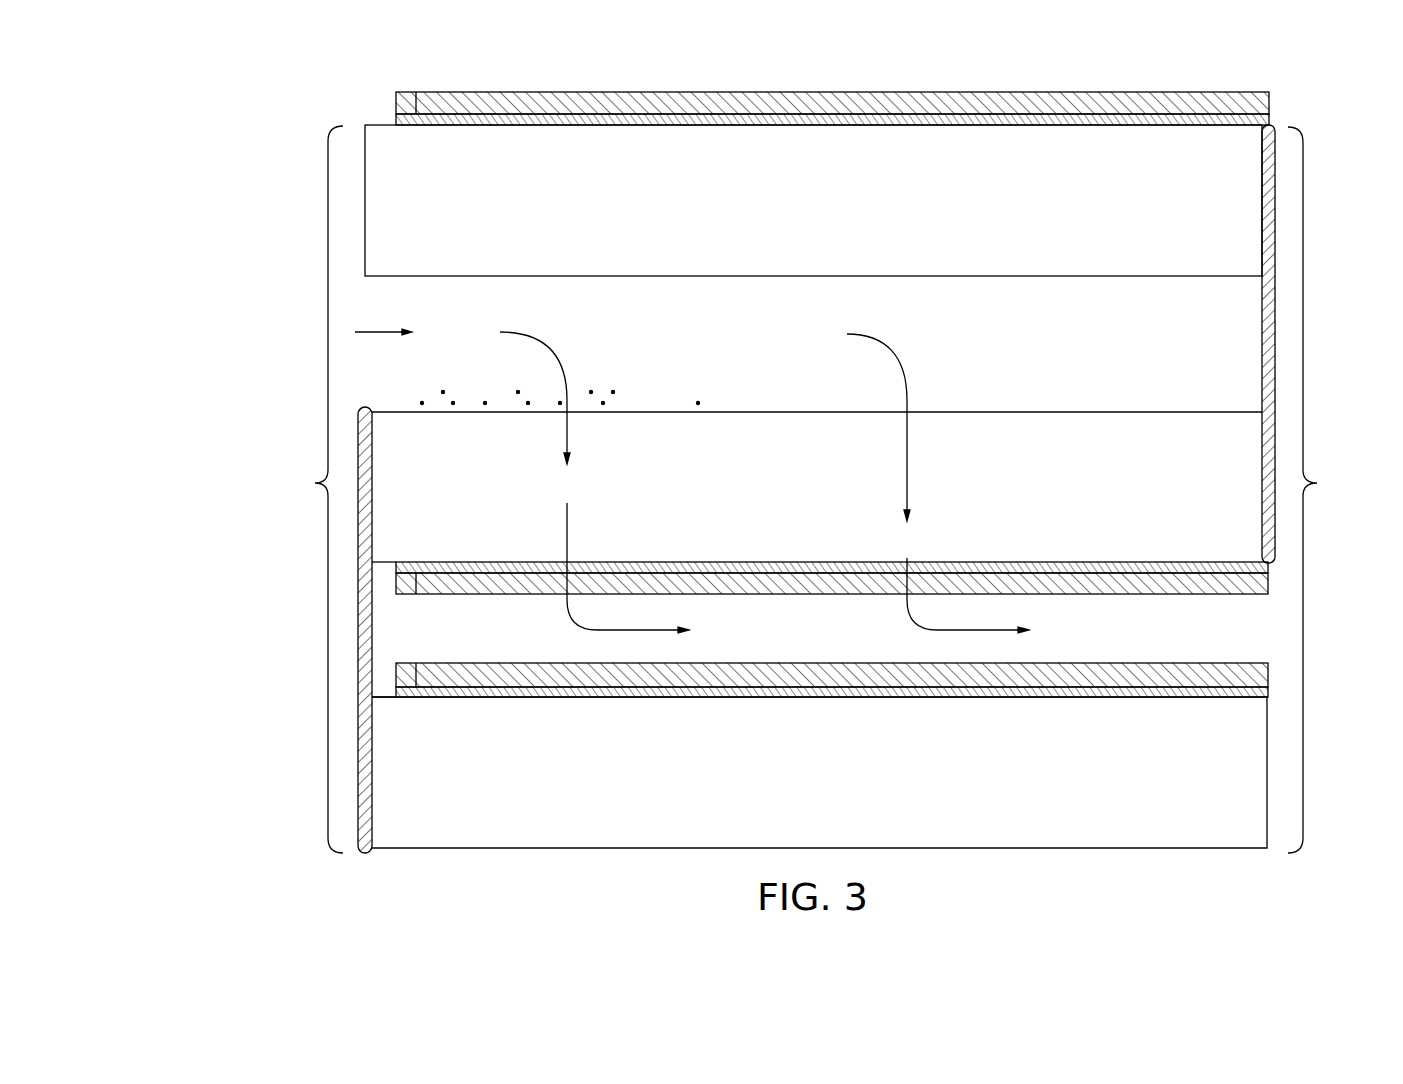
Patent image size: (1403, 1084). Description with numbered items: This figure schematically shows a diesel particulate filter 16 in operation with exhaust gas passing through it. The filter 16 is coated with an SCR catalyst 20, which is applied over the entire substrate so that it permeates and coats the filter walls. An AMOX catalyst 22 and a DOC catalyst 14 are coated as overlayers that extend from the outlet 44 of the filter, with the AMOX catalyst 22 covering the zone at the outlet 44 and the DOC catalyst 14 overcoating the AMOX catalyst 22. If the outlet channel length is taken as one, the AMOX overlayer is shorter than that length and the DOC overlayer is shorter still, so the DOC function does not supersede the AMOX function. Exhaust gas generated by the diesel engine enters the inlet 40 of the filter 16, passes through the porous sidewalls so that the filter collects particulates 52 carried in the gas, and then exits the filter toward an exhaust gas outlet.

The filter 16 is at (300, 157).
The DOC catalyst 14 is at (1180, 587).
The AMOX catalyst 22 is at (1237, 570).
The SCR catalyst 20 is at (918, 827).
The particulates 52 is at (637, 385).
The inlet 40 is at (310, 489).
The outlet 44 is at (1320, 490).